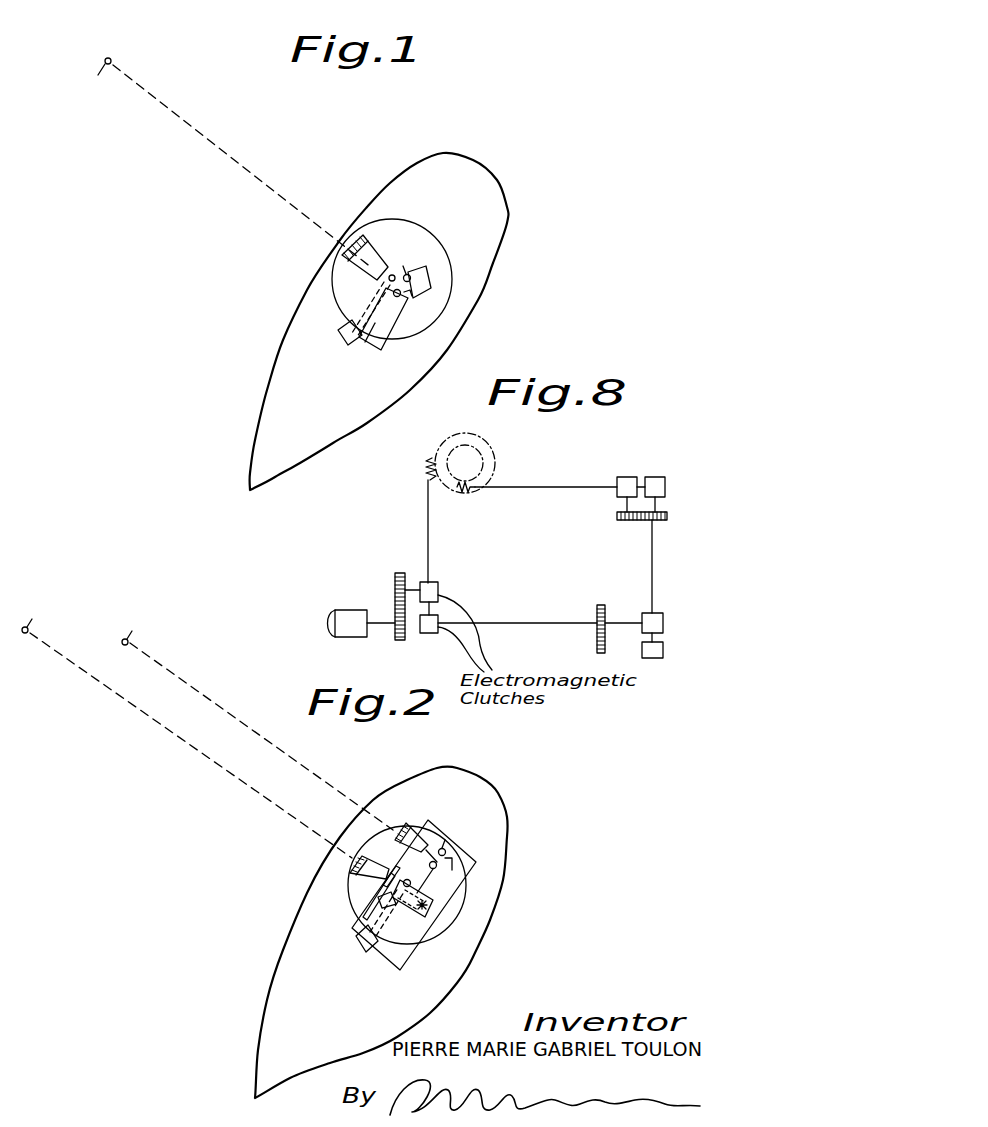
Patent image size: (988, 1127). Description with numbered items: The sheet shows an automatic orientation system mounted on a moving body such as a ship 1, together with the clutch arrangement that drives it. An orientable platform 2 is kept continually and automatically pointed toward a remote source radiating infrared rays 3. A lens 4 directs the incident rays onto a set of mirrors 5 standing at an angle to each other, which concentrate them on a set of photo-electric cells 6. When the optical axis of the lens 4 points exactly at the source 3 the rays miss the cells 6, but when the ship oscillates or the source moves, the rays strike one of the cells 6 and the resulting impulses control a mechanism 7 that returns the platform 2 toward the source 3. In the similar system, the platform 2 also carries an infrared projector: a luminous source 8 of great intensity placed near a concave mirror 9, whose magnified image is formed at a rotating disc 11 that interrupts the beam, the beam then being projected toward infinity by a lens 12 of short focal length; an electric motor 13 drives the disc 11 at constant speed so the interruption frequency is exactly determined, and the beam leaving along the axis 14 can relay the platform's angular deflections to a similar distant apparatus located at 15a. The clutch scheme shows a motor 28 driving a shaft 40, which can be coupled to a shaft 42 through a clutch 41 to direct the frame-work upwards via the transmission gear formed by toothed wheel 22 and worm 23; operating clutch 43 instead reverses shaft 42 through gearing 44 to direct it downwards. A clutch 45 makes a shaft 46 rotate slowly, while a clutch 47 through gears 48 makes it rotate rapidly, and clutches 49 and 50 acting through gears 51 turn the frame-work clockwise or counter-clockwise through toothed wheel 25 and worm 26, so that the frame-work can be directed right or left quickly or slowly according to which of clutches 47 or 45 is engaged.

In FIG. 1, the ship 1 is at (368, 412).
In FIG. 2, the ship 1 is at (507, 820).
In FIG. 1, the orientable platform 2 is at (440, 259).
In FIG. 2, the orientable platform 2 is at (452, 911).
In FIG. 1, the source of infrared rays 3 is at (225, 163).
In FIG. 2, the source of infrared rays 3 is at (257, 723).
In FIG. 1, the lens 4 is at (342, 250).
In FIG. 2, the lens 4 is at (408, 830).
In FIG. 1, the set of mirrors 5 is at (415, 294).
In FIG. 2, the set of mirrors 5 is at (442, 860).
In FIG. 1, the set of photo-electric cells 6 is at (407, 260).
In FIG. 2, the set of photo-electric cells 6 is at (449, 837).
In FIG. 1, the mechanism 7 is at (360, 346).
In FIG. 2, the mechanism 7 is at (358, 946).
In FIG. 2, the luminous source 8 is at (412, 912).
In FIG. 2, the concave mirror 9 is at (448, 920).
In FIG. 2, the rotating disc 11 is at (365, 915).
In FIG. 2, the lens 12 is at (352, 864).
In FIG. 2, the electric motor 13 is at (383, 883).
In FIG. 2, the beam axis 14 is at (205, 759).
In FIG. 2, the distant apparatus location 15a is at (187, 731).
In FIG. 8, the toothed wheel 22 is at (482, 434).
In FIG. 8, the worm 23 is at (426, 473).
In FIG. 8, the toothed wheel 25 is at (483, 450).
In FIG. 8, the worm 26 is at (470, 492).
In FIG. 8, the motor 28 is at (338, 632).
In FIG. 8, the shaft 40 is at (382, 628).
In FIG. 8, the clutch 41 is at (436, 630).
In FIG. 8, the shaft 42 is at (426, 517).
In FIG. 8, the clutch 43 is at (440, 588).
In FIG. 8, the gearing 44 is at (396, 586).
In FIG. 8, the clutch 45 is at (655, 613).
In FIG. 8, the shaft 46 is at (654, 562).
In FIG. 8, the clutch 47 is at (660, 652).
In FIG. 8, the gears 48 is at (596, 642).
In FIG. 8, the clutch 49 is at (628, 477).
In FIG. 8, the clutch 50 is at (658, 477).
In FIG. 8, the gears 51 is at (634, 522).